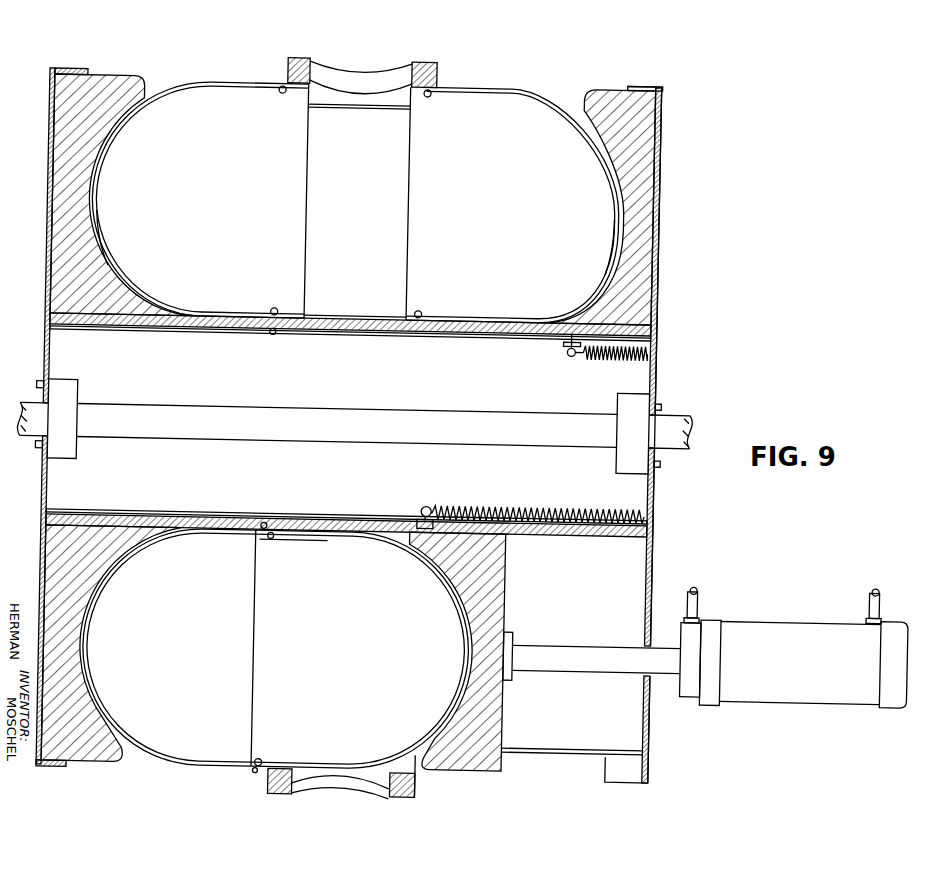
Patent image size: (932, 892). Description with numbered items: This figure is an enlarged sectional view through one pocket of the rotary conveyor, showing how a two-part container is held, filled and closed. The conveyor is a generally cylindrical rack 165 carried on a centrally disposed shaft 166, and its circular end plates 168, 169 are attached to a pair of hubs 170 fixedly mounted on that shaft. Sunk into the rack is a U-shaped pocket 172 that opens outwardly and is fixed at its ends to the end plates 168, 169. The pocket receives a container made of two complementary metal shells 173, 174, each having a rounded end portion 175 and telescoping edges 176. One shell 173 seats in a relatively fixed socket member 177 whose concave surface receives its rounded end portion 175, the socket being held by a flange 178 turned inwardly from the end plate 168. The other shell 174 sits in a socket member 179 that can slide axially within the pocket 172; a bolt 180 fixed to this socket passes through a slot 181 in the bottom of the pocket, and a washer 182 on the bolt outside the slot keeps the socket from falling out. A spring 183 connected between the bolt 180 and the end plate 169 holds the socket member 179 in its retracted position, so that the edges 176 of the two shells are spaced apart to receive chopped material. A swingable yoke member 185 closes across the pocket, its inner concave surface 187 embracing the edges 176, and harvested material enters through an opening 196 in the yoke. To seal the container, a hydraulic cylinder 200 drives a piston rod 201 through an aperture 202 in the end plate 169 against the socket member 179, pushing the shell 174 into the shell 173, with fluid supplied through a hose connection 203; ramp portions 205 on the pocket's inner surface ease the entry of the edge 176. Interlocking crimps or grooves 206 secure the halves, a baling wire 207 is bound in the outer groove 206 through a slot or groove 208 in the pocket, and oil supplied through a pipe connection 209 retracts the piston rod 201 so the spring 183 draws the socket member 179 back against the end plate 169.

The cylindrical rack 165 is at (660, 141).
The shaft 166 is at (223, 410).
The end plate 168 is at (45, 333).
The end plate 169 is at (655, 370).
The hubs 170 is at (78, 380).
The pocket 172 is at (213, 325).
The container shell 173 is at (213, 80).
The container shell 174 is at (512, 90).
The rounded end portion 175 is at (100, 227).
The telescoping edges 176 is at (405, 248).
The socket member 177 is at (135, 75).
The flange 178 is at (85, 58).
The socket member 179 is at (608, 95).
The bolt 180 is at (568, 352).
The slot 181 is at (440, 337).
The washer 182 is at (565, 340).
The spring 183 is at (587, 357).
The yoke member 185 is at (306, 58).
The inner concave surface 187 is at (400, 99).
The opening 196 is at (318, 64).
The hydraulic cylinder 200 is at (800, 675).
The piston rod 201 is at (560, 648).
The aperture 202 is at (662, 190).
The hose connection 203 is at (878, 598).
The ramp portions 205 is at (315, 317).
The interlocking crimps or grooves 206 is at (284, 84).
The baling wire 207 is at (270, 527).
The slot or groove 208 is at (273, 330).
The pipe connection 209 is at (695, 597).